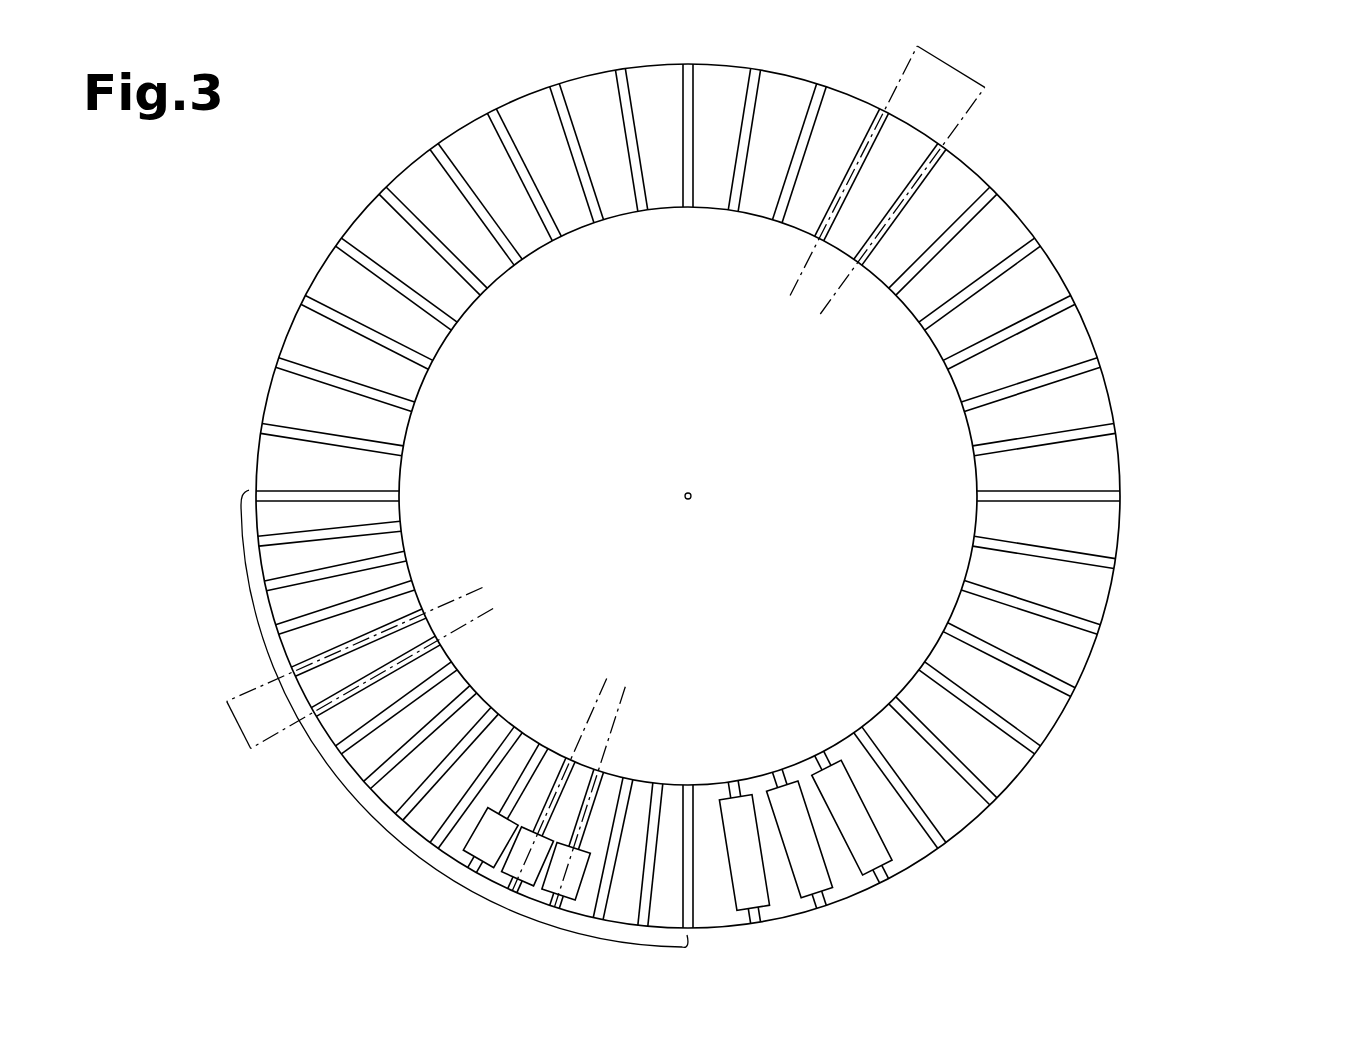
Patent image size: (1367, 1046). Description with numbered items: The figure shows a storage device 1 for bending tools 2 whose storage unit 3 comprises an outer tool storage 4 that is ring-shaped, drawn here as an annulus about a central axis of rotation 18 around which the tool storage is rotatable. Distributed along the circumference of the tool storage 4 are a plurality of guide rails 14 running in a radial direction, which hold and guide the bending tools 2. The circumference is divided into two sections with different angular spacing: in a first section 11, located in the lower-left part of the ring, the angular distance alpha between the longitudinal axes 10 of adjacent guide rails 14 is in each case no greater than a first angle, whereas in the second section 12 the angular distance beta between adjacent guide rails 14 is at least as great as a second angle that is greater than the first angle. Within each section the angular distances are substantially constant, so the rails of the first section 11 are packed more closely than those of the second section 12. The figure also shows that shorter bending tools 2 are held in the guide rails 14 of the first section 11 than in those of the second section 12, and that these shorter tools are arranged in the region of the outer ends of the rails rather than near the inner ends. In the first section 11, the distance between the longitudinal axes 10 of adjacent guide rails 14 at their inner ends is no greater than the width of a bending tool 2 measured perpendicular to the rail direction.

The storage device 1 is at (1222, 204).
The bending tools 2 is at (570, 908).
The storage unit 3 is at (1144, 332).
The outer tool storage 4 is at (265, 386).
The longitudinal axes 10 is at (818, 320).
The first section 11 is at (369, 792).
The second section 12 is at (1038, 127).
The guide rails 14 is at (512, 182).
The axis of rotation 18 is at (692, 495).